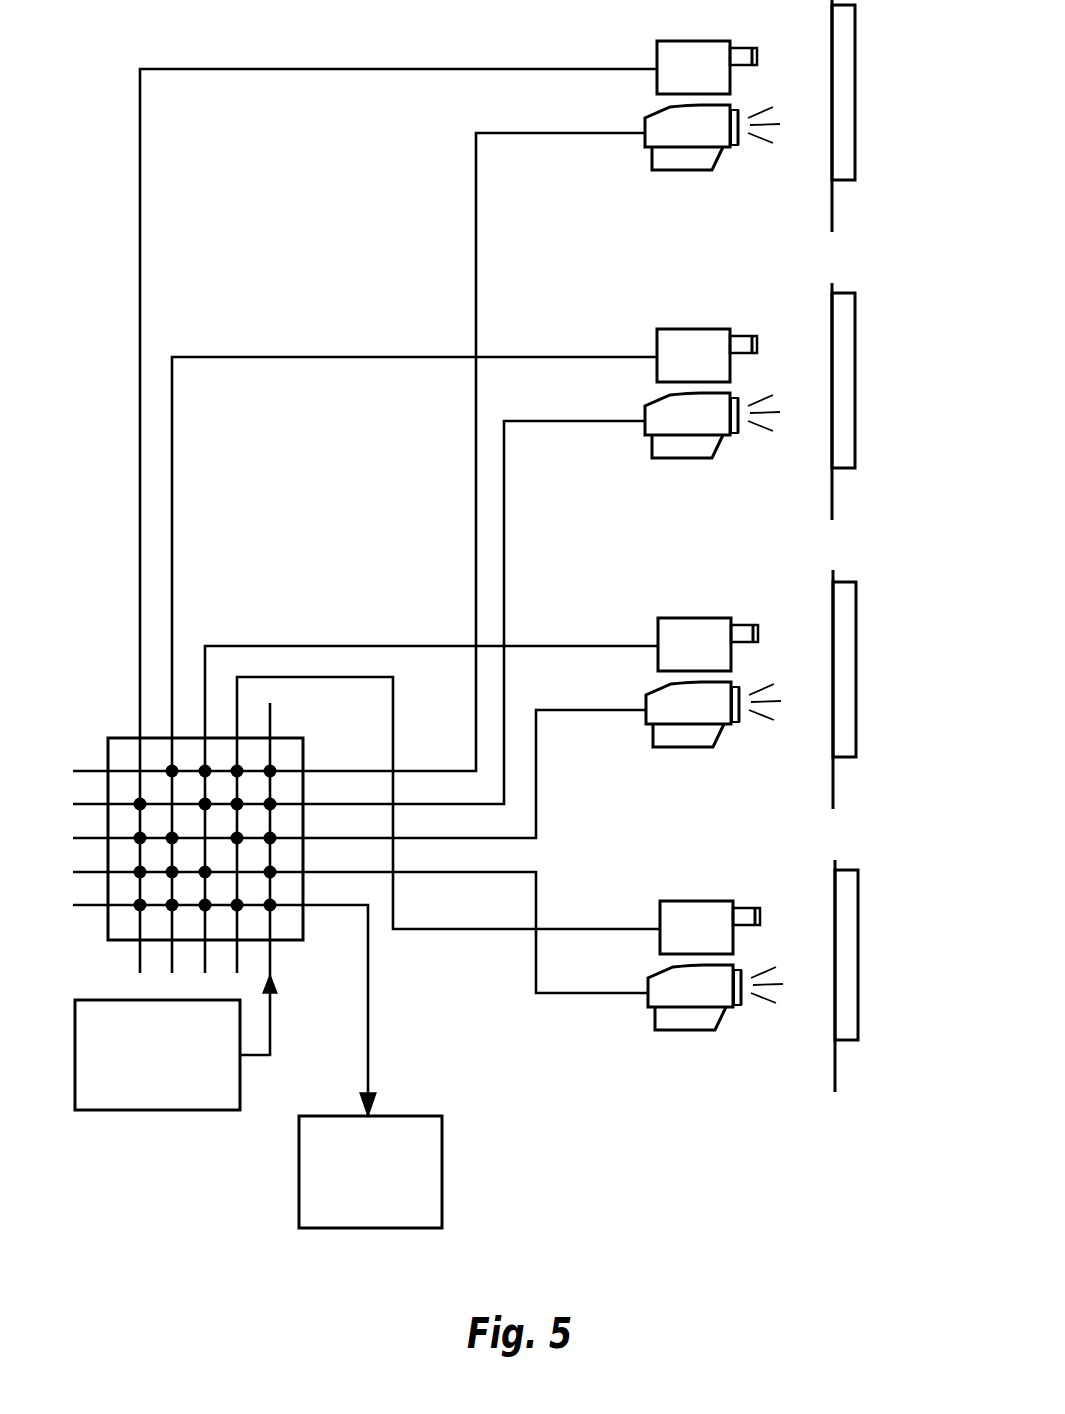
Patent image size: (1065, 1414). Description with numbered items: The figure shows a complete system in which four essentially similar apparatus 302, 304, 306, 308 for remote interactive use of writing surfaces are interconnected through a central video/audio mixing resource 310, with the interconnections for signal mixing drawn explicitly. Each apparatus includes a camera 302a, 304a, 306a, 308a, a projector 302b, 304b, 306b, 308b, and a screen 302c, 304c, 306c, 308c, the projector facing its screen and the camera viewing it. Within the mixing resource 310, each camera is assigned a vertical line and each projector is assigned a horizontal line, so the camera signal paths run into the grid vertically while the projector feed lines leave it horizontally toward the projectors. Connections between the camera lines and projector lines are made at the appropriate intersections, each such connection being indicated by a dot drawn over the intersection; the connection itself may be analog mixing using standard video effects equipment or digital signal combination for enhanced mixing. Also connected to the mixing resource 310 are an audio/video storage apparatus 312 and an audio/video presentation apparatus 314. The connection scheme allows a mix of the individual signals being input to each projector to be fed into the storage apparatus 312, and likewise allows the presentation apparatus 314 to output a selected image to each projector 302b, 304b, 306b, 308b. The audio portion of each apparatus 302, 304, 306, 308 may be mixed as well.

The apparatus 302 is at (763, 137).
The camera 302a is at (706, 40).
The projector 302b is at (660, 171).
The screen 302c is at (879, 116).
The apparatus 304 is at (763, 422).
The camera 304a is at (697, 338).
The projector 304b is at (690, 444).
The screen 304c is at (879, 401).
The apparatus 306 is at (764, 710).
The camera 306a is at (698, 627).
The projector 306b is at (691, 733).
The screen 306c is at (880, 689).
The apparatus 308 is at (766, 998).
The camera 308a is at (700, 910).
The projector 308b is at (693, 1016).
The screen 308c is at (882, 976).
The central mixing resource 310 is at (122, 737).
The audio/video storage apparatus 312 is at (442, 1163).
The audio/video presentation apparatus 314 is at (142, 1110).